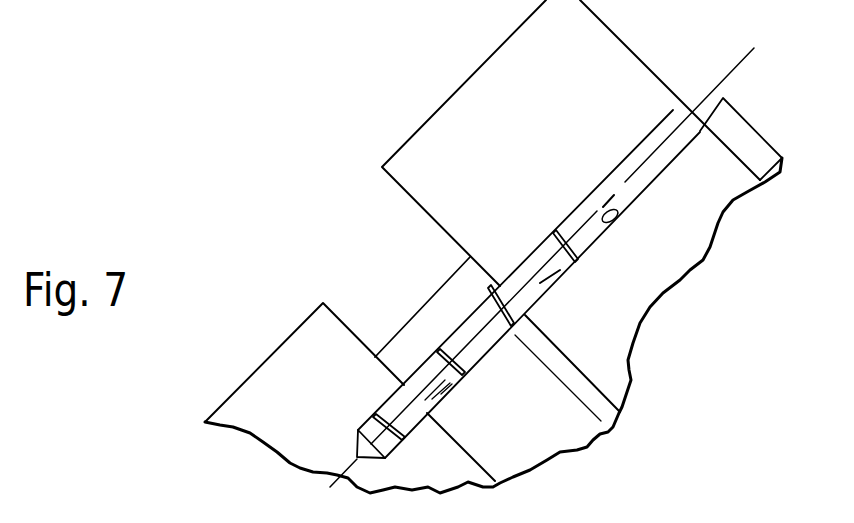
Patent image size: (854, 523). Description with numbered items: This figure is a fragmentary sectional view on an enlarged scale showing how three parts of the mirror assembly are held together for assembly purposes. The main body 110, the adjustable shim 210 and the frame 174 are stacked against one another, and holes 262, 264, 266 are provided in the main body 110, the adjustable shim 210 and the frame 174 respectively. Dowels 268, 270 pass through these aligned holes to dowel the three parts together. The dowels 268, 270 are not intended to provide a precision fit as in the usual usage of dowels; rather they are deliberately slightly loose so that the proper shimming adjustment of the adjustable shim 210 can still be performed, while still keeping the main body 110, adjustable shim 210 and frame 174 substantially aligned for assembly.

The frame 174 is at (473, 69).
The main body 110 is at (278, 346).
The adjustable shim 210 is at (417, 312).
The dowel 270 is at (525, 262).
The dowel 268 is at (395, 403).
The hole 264 is at (480, 352).
The hole 262 is at (396, 427).
The hole 266 is at (617, 223).